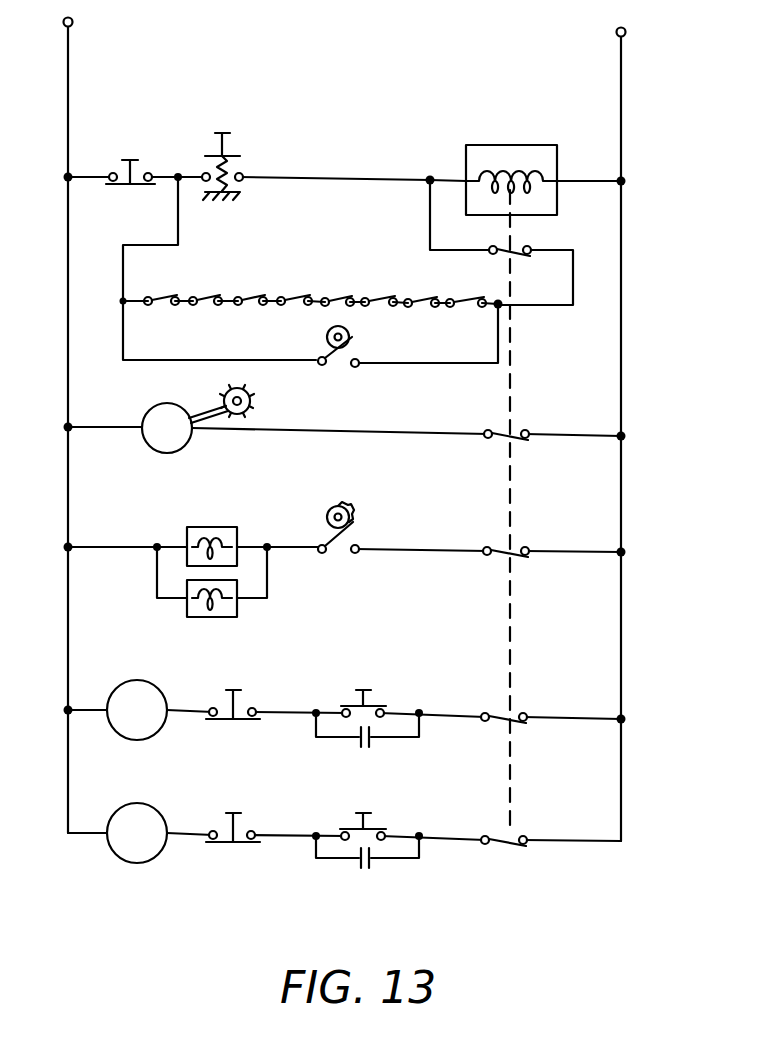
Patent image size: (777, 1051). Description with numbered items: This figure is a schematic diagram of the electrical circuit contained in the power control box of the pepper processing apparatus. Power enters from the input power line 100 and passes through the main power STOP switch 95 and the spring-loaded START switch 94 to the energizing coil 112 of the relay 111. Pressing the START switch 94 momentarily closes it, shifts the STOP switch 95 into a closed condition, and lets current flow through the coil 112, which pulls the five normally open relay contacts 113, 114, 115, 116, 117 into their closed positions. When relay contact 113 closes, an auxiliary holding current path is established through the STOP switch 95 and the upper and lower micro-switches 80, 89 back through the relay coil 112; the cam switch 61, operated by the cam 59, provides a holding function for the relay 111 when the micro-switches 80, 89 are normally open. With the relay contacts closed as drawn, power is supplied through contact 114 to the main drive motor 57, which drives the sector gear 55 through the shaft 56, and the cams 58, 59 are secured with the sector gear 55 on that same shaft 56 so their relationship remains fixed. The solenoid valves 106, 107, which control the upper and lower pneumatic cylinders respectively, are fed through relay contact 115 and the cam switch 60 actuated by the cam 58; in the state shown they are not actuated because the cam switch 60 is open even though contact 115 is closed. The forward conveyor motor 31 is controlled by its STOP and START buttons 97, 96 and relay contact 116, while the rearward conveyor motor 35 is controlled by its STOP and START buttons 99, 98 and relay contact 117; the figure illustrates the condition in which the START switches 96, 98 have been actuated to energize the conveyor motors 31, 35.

The input power line 100 is at (73, 19).
The STOP switch 95 is at (125, 168).
The START switch 94 is at (232, 143).
The relay 111 is at (466, 152).
The energizing coil 112 is at (538, 176).
The relay contact 113 is at (524, 258).
The upper micro-switches 80 is at (218, 292).
The lower micro-switches 89 is at (392, 268).
The cam 59 is at (326, 341).
The shaft 56 is at (205, 410).
The cam switch 61 is at (337, 366).
The main drive motor 57 is at (150, 412).
The sector gear 55 is at (252, 401).
The relay contact 114 is at (520, 444).
The solenoid valve 106 is at (234, 526).
The solenoid valve 107 is at (232, 614).
The cam 58 is at (325, 521).
The cam switch 60 is at (340, 563).
The relay contact 115 is at (519, 560).
The forward conveyor motor 31 is at (166, 728).
The STOP button 97 is at (238, 700).
The START button 96 is at (370, 700).
The relay contact 116 is at (517, 727).
The rearward conveyor motor 35 is at (150, 803).
The STOP button 99 is at (238, 823).
The START button 98 is at (370, 823).
The relay contact 117 is at (515, 850).